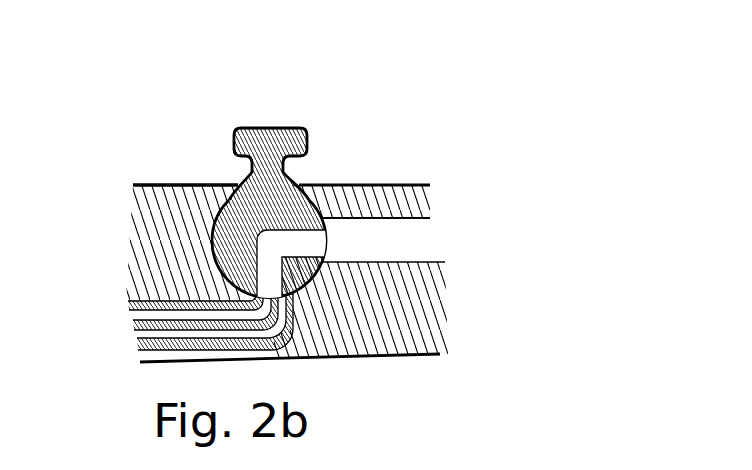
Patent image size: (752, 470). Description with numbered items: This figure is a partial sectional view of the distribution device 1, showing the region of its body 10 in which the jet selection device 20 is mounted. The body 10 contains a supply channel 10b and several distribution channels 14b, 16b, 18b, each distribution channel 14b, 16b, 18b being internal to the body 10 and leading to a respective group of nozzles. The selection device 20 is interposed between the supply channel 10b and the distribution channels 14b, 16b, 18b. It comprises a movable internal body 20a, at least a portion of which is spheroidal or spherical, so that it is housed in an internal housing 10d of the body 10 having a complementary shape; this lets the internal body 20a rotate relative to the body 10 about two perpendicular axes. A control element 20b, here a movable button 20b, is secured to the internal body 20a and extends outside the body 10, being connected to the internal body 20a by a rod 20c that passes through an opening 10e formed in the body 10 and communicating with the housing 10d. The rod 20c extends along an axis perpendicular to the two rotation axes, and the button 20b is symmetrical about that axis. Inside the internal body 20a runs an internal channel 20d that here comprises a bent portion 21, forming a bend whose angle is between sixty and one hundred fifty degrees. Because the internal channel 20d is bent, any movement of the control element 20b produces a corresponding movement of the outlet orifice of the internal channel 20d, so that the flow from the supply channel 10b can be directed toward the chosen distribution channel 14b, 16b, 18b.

The distribution device 1 is at (125, 100).
The body 10 is at (432, 358).
The supply channel 10b is at (402, 247).
The internal housing 10d is at (340, 243).
The opening 10e is at (288, 178).
The distribution channel 14b is at (140, 345).
The distribution channel 16b is at (132, 325).
The distribution channel 18b is at (130, 302).
The jet selection device 20 is at (298, 110).
The internal body 20a is at (220, 268).
The control element 20b is at (252, 127).
The rod 20c is at (247, 175).
The internal channel 20d is at (318, 243).
The bent portion 21 is at (253, 233).